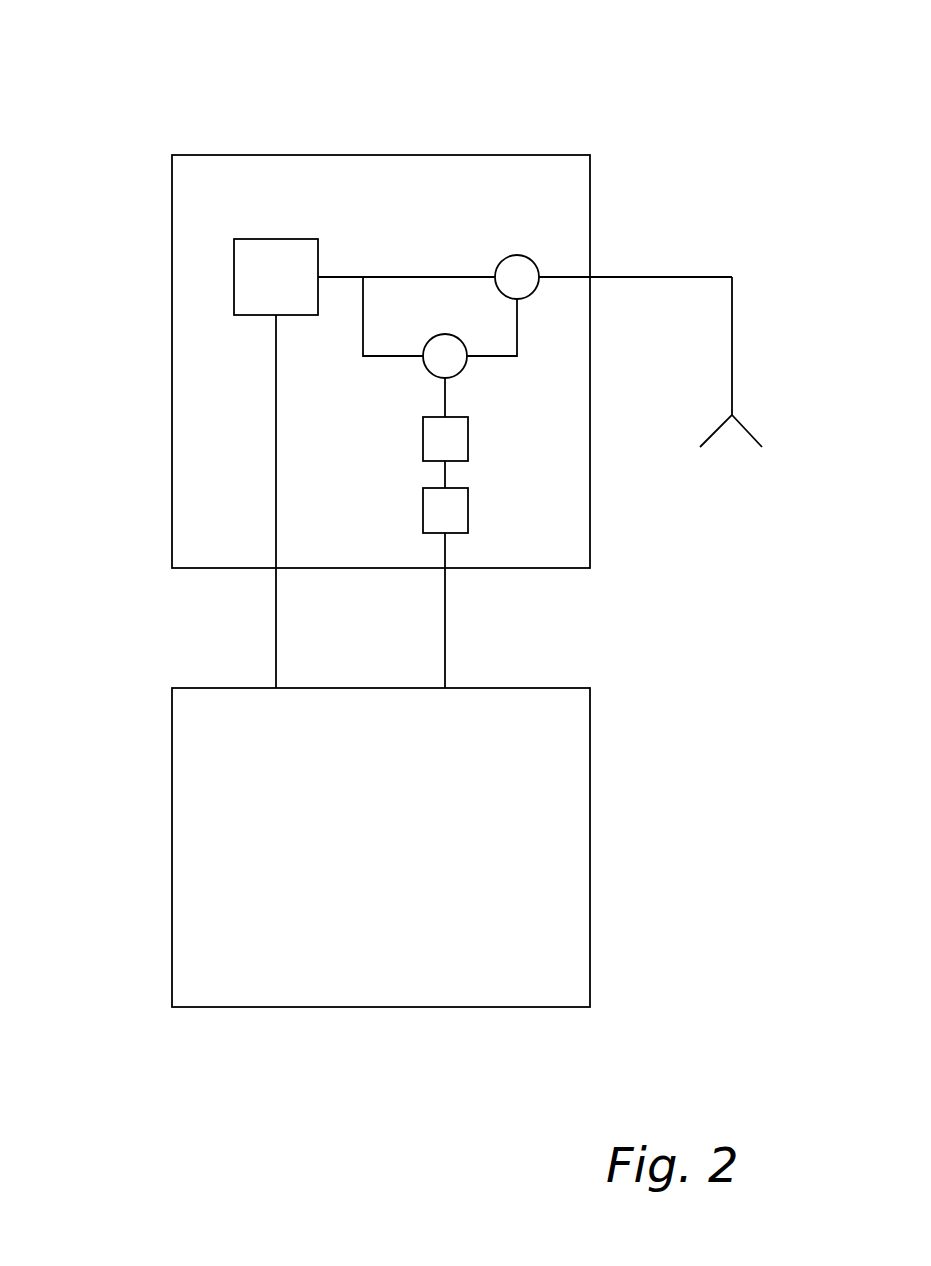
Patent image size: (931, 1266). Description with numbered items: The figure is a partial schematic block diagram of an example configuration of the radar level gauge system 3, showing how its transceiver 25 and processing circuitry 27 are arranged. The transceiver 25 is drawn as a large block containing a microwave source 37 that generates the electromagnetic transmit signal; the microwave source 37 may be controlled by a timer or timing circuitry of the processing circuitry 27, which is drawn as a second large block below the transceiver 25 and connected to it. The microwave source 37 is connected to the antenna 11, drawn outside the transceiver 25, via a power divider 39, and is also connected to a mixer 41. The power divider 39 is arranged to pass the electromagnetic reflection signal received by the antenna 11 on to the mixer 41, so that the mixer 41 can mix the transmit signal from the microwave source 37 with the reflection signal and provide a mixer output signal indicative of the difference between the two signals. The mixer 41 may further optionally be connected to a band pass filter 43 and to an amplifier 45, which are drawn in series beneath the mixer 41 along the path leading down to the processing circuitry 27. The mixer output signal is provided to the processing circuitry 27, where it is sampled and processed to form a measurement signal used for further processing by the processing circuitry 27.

The radar level gauge system 3 is at (607, 82).
The antenna 11 is at (752, 437).
The transceiver 25 is at (172, 368).
The processing circuitry 27 is at (172, 835).
The microwave source 37 is at (270, 238).
The power divider 39 is at (517, 255).
The mixer 41 is at (466, 343).
The band pass filter 43 is at (468, 438).
The amplifier 45 is at (468, 511).